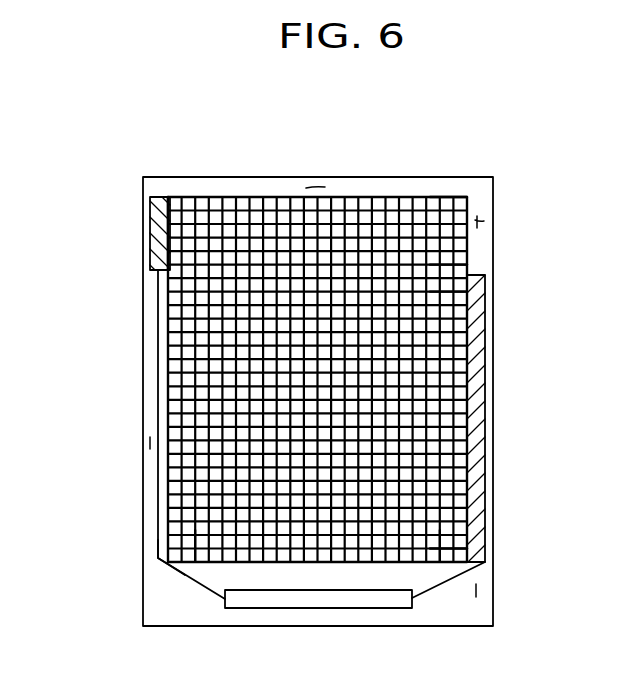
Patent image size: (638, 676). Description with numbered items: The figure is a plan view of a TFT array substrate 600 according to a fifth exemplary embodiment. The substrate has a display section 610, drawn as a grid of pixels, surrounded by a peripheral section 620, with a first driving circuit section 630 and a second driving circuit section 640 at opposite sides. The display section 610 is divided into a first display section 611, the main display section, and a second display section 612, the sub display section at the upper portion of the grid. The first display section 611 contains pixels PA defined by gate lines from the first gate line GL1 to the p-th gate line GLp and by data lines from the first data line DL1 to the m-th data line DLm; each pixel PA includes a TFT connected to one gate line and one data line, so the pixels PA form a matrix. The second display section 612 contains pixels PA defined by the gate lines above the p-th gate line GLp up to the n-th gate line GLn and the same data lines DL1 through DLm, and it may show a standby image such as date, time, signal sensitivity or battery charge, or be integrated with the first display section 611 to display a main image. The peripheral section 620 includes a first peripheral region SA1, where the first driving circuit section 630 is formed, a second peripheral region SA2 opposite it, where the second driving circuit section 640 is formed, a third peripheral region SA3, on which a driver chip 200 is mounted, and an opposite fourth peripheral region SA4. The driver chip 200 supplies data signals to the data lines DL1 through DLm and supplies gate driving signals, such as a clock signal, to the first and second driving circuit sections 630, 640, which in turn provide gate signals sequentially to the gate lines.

The TFT array substrate 600 is at (526, 162).
The display section 610 is at (78, 240).
The first display section 611 is at (170, 342).
The second display section 612 is at (165, 263).
The peripheral section 620 is at (178, 592).
The first driving circuit section 630 is at (478, 363).
The second driving circuit section 640 is at (163, 213).
The driver chip 200 is at (318, 598).
The pixel PA is at (163, 557).
The first data line DL1 is at (193, 563).
The m-th data line DLm is at (443, 563).
The n-th gate line GLn is at (460, 205).
The p-th gate line GLp is at (450, 279).
The first gate line GL1 is at (455, 549).
The first peripheral region SA1 is at (484, 221).
The second peripheral region SA2 is at (150, 443).
The third peripheral region SA3 is at (476, 591).
The fourth peripheral region SA4 is at (318, 187).